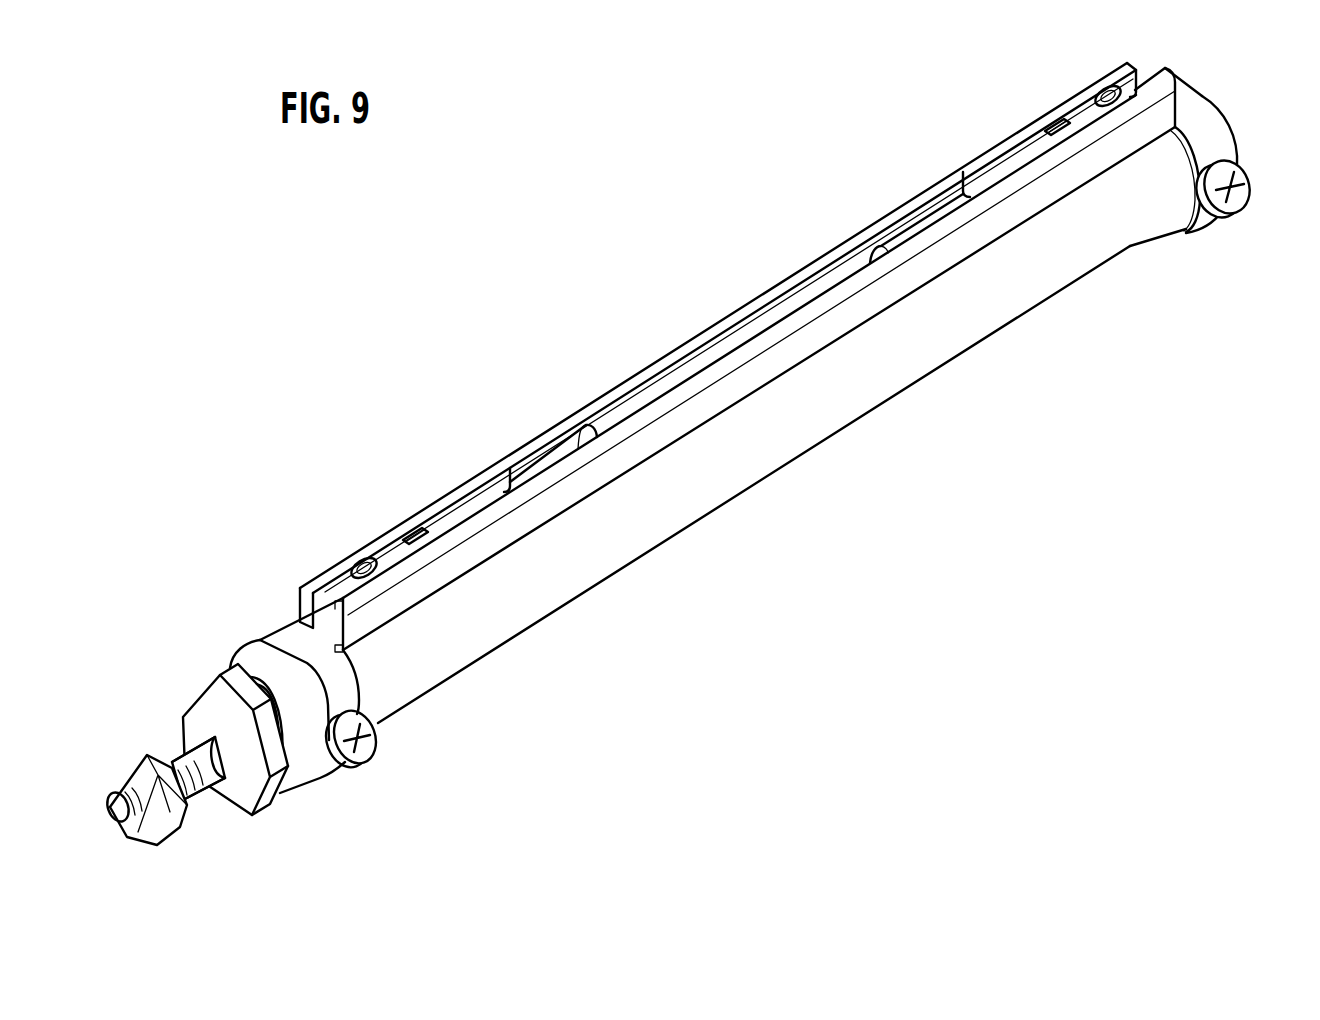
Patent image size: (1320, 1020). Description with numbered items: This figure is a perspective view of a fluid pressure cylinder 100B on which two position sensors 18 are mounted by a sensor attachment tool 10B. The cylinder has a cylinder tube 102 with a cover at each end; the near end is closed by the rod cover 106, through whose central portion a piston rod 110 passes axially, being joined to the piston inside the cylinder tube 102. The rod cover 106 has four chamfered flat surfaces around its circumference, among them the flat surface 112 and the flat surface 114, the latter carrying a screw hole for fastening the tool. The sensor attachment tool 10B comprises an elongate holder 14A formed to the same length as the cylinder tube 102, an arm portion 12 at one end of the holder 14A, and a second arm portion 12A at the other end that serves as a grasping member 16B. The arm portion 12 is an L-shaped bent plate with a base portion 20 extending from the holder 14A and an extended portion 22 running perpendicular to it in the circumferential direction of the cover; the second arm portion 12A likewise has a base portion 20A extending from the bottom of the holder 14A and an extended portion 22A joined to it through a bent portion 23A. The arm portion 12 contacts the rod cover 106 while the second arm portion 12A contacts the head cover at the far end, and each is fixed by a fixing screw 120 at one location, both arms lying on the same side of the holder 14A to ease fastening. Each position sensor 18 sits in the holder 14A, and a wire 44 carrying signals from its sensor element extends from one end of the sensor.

The sensor attachment tool 10B is at (360, 518).
The fluid pressure cylinder 100B is at (638, 298).
The cylinder tube 102 is at (720, 490).
The arm portion 12 is at (279, 709).
The second arm portion 12A is at (1220, 130).
The holder 14A is at (620, 388).
The grasping member 16B is at (1232, 112).
The position sensor 18 is at (455, 505).
The base portion 20 is at (288, 640).
The base portion 20A is at (1187, 90).
The extended portion 22 is at (352, 692).
The extended portion 22A is at (1230, 152).
The bent portion 23A is at (1197, 130).
The wire 44 is at (525, 470).
The rod cover 106 is at (318, 768).
The piston rod 110 is at (170, 750).
The flat surface 112 is at (255, 655).
The flat surface 114 is at (338, 772).
The fixing screw 120 is at (1227, 207).